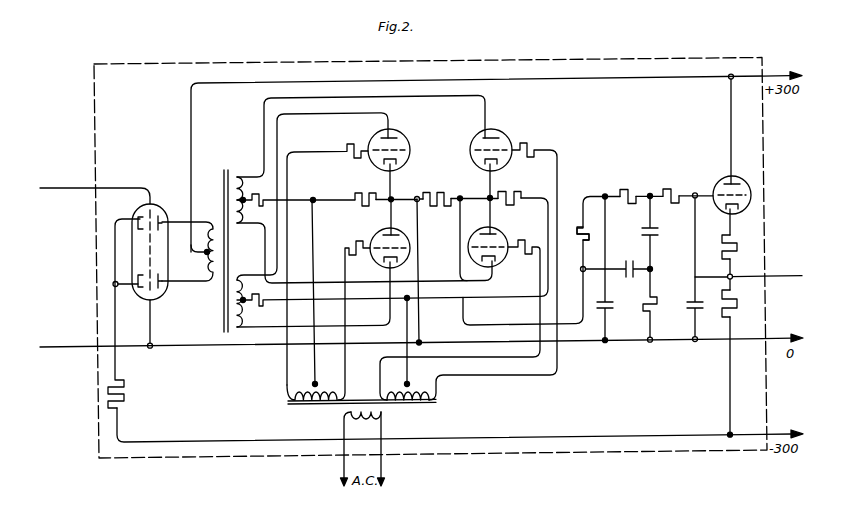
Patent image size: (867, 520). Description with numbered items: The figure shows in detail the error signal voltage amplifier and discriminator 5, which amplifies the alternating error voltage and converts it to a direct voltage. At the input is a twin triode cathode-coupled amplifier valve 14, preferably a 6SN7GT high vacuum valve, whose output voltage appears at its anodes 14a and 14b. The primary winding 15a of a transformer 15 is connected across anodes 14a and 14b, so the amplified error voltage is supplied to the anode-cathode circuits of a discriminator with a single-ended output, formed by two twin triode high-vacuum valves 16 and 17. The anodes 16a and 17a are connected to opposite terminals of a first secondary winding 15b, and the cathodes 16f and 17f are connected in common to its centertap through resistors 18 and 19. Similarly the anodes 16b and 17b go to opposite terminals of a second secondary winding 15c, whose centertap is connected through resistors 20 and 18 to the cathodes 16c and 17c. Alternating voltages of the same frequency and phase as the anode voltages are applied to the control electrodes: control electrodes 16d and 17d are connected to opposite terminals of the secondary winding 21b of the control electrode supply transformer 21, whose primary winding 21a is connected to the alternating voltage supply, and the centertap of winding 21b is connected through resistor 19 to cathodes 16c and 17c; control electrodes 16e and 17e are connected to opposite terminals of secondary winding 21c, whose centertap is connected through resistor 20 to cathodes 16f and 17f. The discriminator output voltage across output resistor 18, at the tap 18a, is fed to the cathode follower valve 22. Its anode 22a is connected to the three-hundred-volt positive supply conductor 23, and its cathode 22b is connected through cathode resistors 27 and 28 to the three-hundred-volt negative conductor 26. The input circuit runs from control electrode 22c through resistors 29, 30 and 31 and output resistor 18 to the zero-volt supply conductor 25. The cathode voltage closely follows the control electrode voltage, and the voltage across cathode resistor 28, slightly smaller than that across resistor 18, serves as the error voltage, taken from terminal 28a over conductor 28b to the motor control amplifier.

The error signal voltage amplifier and discriminator 5 is at (188, 64).
The twin triode cathode-coupled amplifier valve 14 is at (162, 241).
The anode 14a is at (164, 214).
The anode 14b is at (163, 290).
The transformer 15 is at (223, 183).
The primary winding 15a is at (205, 262).
The first secondary winding 15b is at (240, 181).
The second secondary winding 15c is at (244, 316).
The twin triode high-vacuum valve 16 is at (470, 136).
The anode 16a is at (487, 137).
The anode 16b is at (401, 135).
The cathode 16c is at (407, 156).
The control electrode 16d is at (380, 147).
The control electrode 16e is at (501, 149).
The cathode 16f is at (473, 157).
The twin triode high-vacuum valve 17 is at (470, 233).
The anode 17a is at (495, 260).
The anode 17b is at (380, 262).
The cathode 17c is at (385, 235).
The control electrode 17d is at (406, 248).
The control electrode 17e is at (475, 254).
The cathode 17f is at (492, 235).
The discriminator output resistor 18 is at (426, 192).
The tap point 18a is at (459, 196).
The resistor 19 is at (360, 192).
The resistor 20 is at (516, 192).
The control electrode supply transformer 21 is at (316, 405).
The primary winding 21a is at (377, 417).
The secondary winding 21b is at (312, 383).
The secondary winding 21c is at (407, 384).
The cathode follower valve 22 is at (752, 190).
The anode 22a is at (737, 183).
The cathode 22b is at (731, 212).
The control electrode 22c is at (718, 190).
The supply conductor 23 is at (770, 74).
The supply conductor 25 is at (776, 337).
The supply conductor 26 is at (778, 433).
The cathode resistor 27 is at (737, 248).
The cathode resistor 28 is at (737, 303).
The terminal 28a is at (700, 281).
The conductor 28b is at (786, 276).
The resistor 29 is at (670, 189).
The resistor 30 is at (627, 189).
The resistor 31 is at (580, 228).